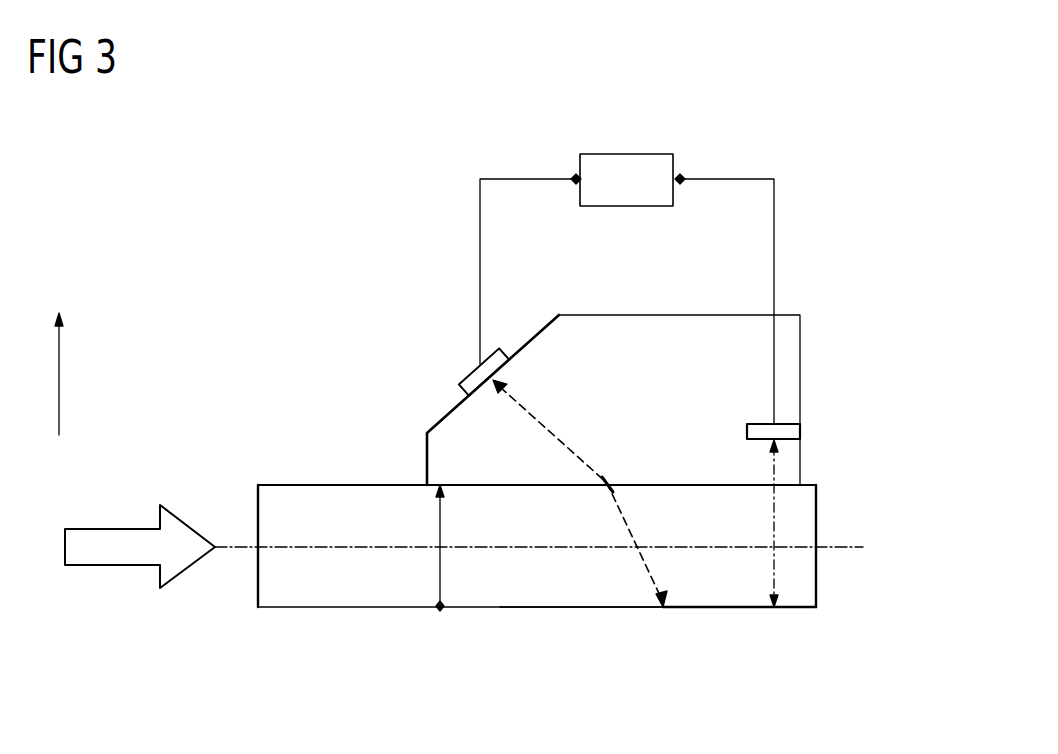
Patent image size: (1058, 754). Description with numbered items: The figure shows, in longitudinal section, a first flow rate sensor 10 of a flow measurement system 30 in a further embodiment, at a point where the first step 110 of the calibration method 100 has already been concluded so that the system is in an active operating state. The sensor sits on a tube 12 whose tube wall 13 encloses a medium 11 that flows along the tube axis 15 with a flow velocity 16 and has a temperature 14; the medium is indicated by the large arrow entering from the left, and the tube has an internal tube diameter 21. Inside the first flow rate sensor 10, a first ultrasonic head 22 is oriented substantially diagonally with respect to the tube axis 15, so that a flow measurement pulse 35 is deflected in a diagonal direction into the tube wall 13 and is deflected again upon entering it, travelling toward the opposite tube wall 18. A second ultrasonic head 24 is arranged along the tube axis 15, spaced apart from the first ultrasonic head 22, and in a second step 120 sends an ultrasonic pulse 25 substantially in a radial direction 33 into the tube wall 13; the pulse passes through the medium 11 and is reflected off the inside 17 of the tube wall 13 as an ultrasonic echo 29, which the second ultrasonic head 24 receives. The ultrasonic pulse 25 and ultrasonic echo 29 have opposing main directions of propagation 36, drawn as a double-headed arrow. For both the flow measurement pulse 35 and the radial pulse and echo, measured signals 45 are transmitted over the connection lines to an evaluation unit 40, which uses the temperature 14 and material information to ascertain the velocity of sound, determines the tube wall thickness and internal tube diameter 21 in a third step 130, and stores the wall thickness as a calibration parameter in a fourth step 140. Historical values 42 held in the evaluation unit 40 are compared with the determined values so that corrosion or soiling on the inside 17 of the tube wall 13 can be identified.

The flow measurement system 30 is at (456, 382).
The method for calibrating the flow measurement system 100 is at (456, 382).
The first step 110 is at (177, 165).
The first flow rate sensor 10 is at (438, 445).
The medium 11 is at (136, 522).
The temperature 14 is at (136, 522).
The flow velocity 16 is at (105, 529).
The tube 12 is at (283, 609).
The tube wall 13 is at (752, 609).
The tube axis 15 is at (855, 550).
The inside of the tube wall 17 is at (602, 609).
The opposite tube wall 18 is at (552, 609).
The internal tube diameter 21 is at (440, 522).
The first ultrasonic head 22 is at (476, 376).
The second ultrasonic head 24 is at (785, 432).
The ultrasonic pulse 25 is at (707, 504).
The ultrasonic echo 29 is at (707, 504).
The main directions of propagation 36 is at (707, 504).
The second step 120 is at (773, 462).
The radial direction 33 is at (60, 376).
The flow measurement pulse 35 is at (545, 425).
The evaluation unit 40 is at (625, 144).
The historical values 42 is at (625, 144).
The third step 130 is at (625, 144).
The fourth step 140 is at (622, 153).
The measured signals 45 is at (505, 179).